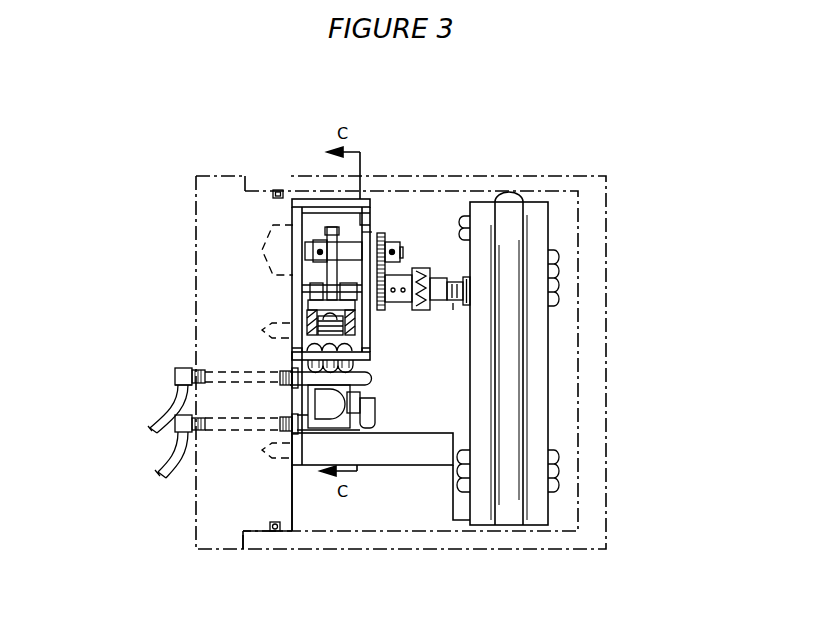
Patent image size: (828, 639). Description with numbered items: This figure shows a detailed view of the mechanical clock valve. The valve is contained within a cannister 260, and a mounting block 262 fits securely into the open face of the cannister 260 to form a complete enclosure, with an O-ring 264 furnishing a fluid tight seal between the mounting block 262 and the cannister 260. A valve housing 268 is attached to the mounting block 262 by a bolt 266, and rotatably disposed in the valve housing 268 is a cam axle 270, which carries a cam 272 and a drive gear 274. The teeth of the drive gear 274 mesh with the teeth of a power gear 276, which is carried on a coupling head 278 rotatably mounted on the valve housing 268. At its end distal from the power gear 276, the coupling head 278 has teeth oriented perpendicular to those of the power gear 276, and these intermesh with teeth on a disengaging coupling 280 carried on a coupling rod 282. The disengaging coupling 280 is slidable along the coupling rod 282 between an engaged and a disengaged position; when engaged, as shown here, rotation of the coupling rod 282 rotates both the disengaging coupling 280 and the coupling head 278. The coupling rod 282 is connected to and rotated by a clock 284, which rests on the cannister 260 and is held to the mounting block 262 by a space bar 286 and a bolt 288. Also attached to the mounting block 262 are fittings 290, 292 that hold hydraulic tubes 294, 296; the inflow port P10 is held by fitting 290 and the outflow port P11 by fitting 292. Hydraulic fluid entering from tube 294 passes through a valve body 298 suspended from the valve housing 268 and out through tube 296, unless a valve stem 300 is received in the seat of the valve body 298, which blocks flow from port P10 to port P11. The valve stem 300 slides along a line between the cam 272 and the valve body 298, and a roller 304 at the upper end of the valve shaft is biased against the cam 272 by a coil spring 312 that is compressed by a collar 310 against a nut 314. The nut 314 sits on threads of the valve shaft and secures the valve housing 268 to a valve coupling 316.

The cannister 260 is at (565, 183).
The mounting block 262 is at (212, 190).
The O-ring 264 is at (277, 190).
The bolt 266 is at (300, 340).
The valve housing 268 is at (353, 208).
The cam axle 270 is at (350, 250).
The cam 272 is at (328, 233).
The drive gear 274 is at (392, 241).
The power gear 276 is at (372, 308).
The coupling head 278 is at (413, 268).
The disengaging coupling 280 is at (422, 261).
The coupling rod 282 is at (445, 297).
The clock 284 is at (535, 228).
The space bar 286 is at (315, 450).
The bolt 288 is at (290, 457).
The fitting 290 is at (190, 432).
The fitting 292 is at (175, 381).
The hydraulic tube 294 is at (176, 478).
The hydraulic tube 296 is at (160, 407).
The valve body 298 is at (330, 408).
The valve stem 300 is at (345, 320).
The roller 304 is at (332, 293).
The collar 310 is at (310, 305).
The coil spring 312 is at (310, 312).
The nut 314 is at (310, 343).
The valve coupling 316 is at (353, 370).
The inflow port P10 is at (170, 438).
The outflow port P11 is at (168, 368).